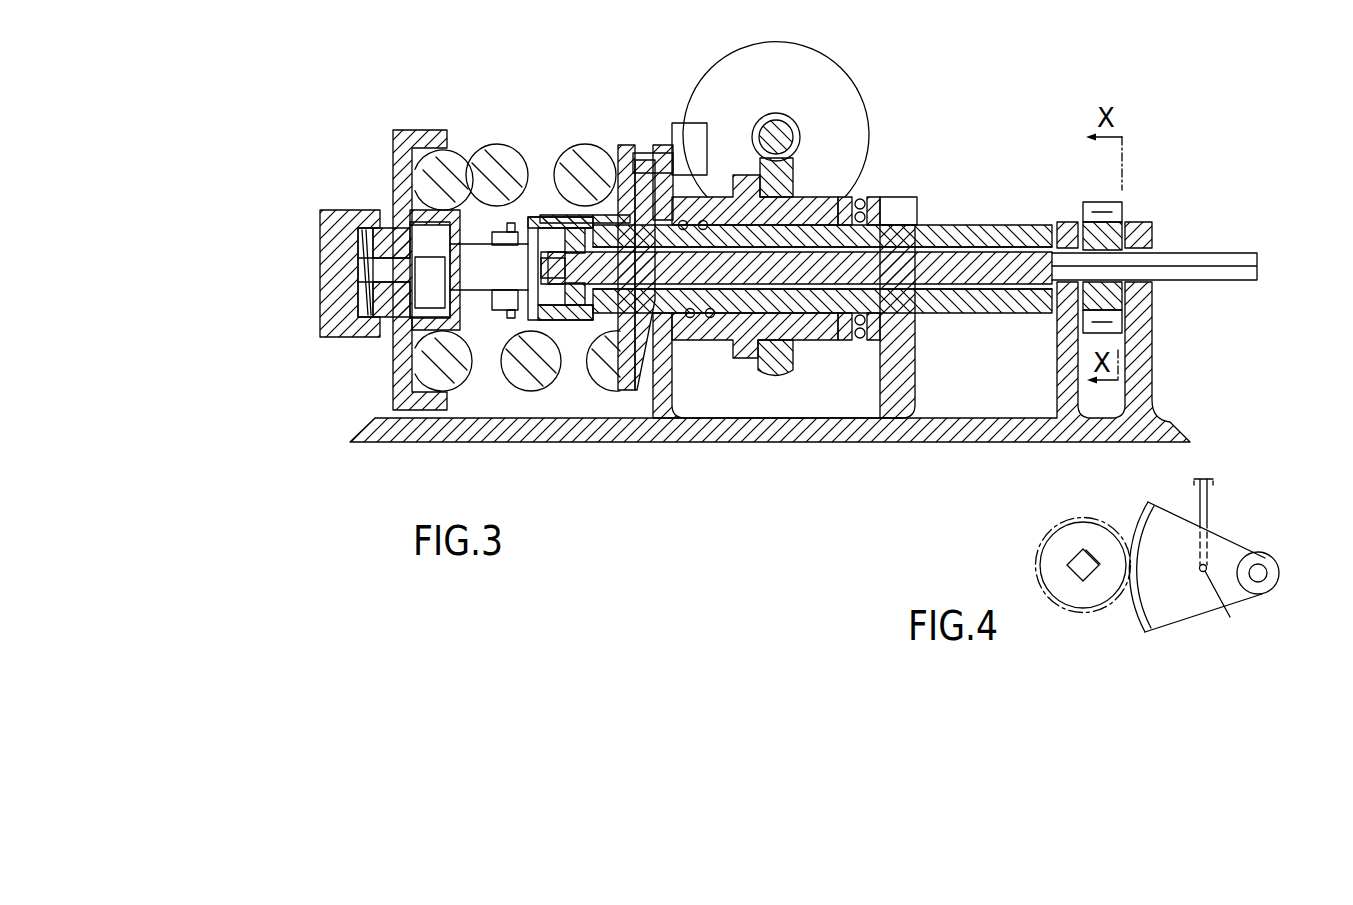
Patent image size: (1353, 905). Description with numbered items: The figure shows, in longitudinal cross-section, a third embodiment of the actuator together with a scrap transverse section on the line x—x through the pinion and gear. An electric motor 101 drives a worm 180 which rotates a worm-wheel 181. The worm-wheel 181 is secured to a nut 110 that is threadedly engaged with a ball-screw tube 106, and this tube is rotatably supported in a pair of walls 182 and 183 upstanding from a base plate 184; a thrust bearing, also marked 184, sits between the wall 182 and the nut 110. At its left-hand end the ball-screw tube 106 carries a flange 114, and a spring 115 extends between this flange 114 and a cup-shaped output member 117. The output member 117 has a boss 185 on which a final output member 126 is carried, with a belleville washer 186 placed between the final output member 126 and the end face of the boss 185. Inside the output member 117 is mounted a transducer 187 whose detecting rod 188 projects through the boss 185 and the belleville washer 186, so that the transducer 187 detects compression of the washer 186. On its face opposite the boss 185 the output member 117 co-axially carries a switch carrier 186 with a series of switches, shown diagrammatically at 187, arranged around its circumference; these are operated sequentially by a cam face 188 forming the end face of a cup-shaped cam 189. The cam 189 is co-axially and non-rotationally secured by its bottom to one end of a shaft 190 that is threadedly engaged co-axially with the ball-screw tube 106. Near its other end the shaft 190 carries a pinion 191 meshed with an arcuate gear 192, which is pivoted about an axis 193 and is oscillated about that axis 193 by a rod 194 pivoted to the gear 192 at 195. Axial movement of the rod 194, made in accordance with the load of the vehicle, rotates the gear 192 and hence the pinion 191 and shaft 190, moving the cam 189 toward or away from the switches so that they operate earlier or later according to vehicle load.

In FIG. 3, the electric motor 101 is at (778, 88).
In FIG. 3, the ball-screw tube 106 is at (760, 298).
In FIG. 3, the nut 110 is at (805, 324).
In FIG. 3, the flange 114 is at (626, 150).
In FIG. 3, the spring 115 is at (490, 160).
In FIG. 3, the output member 117 is at (393, 363).
In FIG. 3, the final output member 126 is at (338, 222).
In FIG. 3, the worm 180 is at (782, 138).
In FIG. 3, the worm-wheel 181 is at (777, 172).
In FIG. 3, the wall 182 is at (893, 387).
In FIG. 3, the wall 183 is at (658, 378).
In FIG. 3, the base plate / thrust bearing 184 is at (862, 198).
In FIG. 3, the boss 185 is at (388, 298).
In FIG. 3, the belleville washer / switch carrier 186 is at (362, 243).
In FIG. 3, the transducer / switches 187 is at (511, 229).
In FIG. 3, the detecting rod / cam surface 188 is at (382, 268).
In FIG. 3, the cup-shaped cam 189 is at (561, 219).
In FIG. 3, the shaft 190 is at (957, 262).
In FIG. 3, the pinion 191 is at (1118, 225).
In FIG. 4, the pinion 191 is at (1063, 582).
In FIG. 4, the arcuate gear 192 is at (1158, 615).
In FIG. 4, the axis 193 is at (1262, 572).
In FIG. 4, the rod 194 is at (1210, 507).
In FIG. 4, the pivot 195 is at (1228, 602).